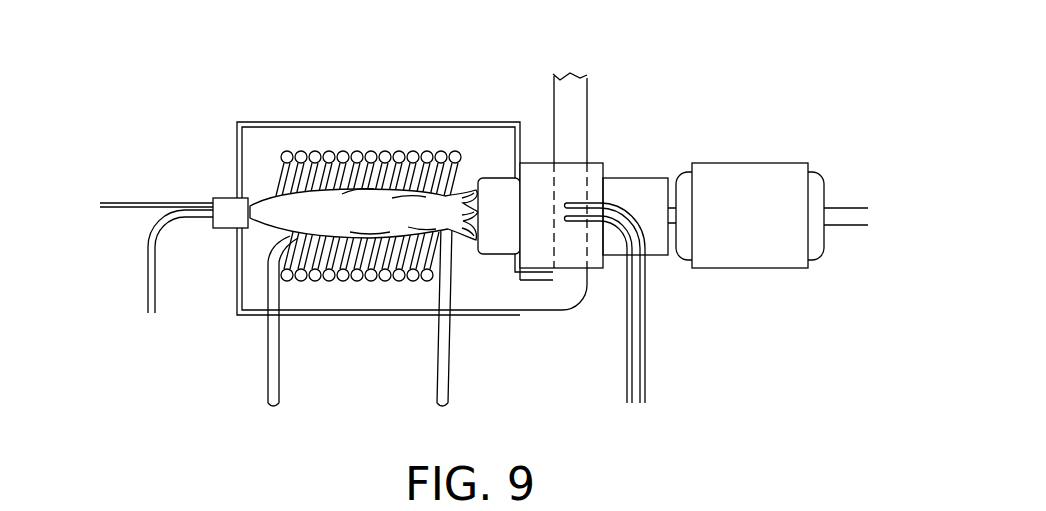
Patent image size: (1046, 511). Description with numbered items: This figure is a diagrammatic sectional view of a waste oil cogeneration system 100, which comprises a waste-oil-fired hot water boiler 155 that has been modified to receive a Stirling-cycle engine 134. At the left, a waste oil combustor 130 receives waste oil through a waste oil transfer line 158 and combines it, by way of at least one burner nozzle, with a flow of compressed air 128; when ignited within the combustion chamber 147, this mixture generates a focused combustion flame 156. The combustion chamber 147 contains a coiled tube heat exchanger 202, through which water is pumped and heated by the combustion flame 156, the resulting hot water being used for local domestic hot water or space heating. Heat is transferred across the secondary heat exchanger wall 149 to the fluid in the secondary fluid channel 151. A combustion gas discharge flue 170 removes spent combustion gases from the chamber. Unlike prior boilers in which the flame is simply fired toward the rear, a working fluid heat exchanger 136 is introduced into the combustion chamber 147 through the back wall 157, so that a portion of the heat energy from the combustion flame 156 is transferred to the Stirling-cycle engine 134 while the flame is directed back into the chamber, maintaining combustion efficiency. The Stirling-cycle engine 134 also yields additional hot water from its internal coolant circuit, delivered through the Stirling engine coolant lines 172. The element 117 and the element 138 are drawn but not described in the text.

The waste oil cogeneration system 100 is at (252, 40).
The waste-oil-fired hot water boiler 155 is at (225, 97).
The back wall 157 is at (516, 148).
The plasma outlet 117 is at (258, 197).
The compressed air 128 is at (148, 203).
The waste oil combustor 130 is at (223, 198).
The waste oil transfer line 158 is at (131, 275).
The secondary heat exchanger wall 149 is at (340, 122).
The secondary fluid channel 151 is at (373, 152).
The combustion chamber 147 is at (398, 295).
The combustion flame 156 is at (326, 181).
The coiled tube heat exchanger 202 is at (267, 331).
The working fluid heat exchanger 136 is at (490, 256).
The Stirling-cycle engine 134 is at (593, 163).
The combustion gas discharge flue 170 is at (587, 98).
The Stirling engine coolant lines 172 is at (646, 332).
The motor 138 is at (722, 268).